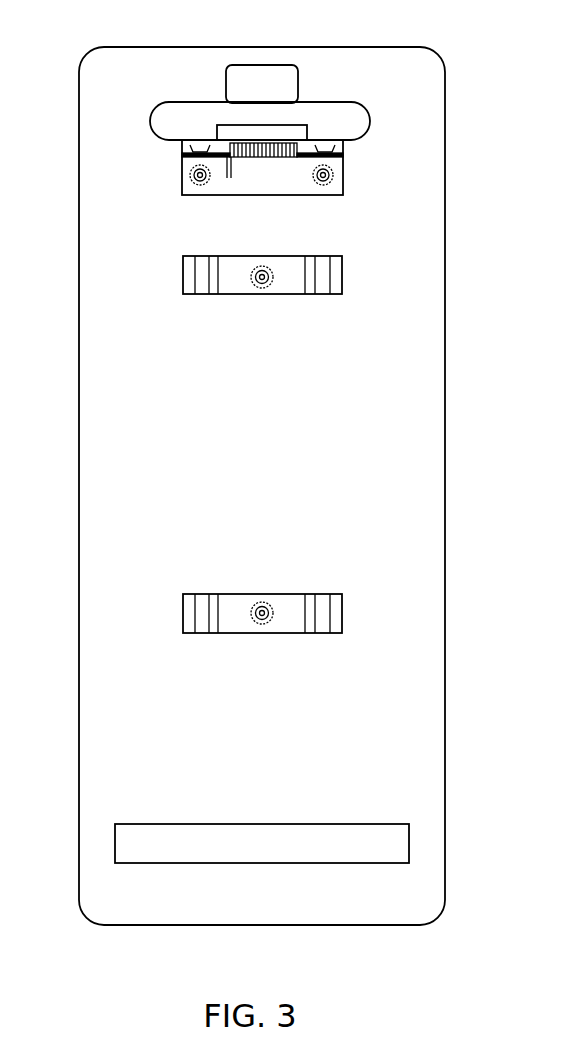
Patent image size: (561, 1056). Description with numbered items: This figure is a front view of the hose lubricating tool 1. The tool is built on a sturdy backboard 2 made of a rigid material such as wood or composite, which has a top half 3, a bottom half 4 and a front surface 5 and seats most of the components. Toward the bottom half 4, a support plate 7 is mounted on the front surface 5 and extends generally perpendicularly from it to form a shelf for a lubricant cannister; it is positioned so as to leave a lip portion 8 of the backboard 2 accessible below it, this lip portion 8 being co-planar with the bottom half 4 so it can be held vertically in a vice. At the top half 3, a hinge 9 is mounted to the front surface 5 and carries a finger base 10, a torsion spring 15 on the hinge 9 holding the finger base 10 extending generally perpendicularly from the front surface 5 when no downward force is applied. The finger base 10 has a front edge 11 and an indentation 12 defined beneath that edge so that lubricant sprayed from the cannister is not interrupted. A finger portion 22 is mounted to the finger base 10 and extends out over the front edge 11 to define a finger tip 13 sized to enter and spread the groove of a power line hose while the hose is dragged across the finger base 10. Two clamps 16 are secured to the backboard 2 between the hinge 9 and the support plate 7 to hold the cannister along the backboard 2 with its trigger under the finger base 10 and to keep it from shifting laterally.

The hose lubricating tool 1 is at (445, 138).
The backboard 2 is at (402, 228).
The top half 3 is at (397, 330).
The bottom half 4 is at (422, 758).
The front surface 5 is at (375, 435).
The support plate 7 is at (343, 837).
The lip portion 8 is at (350, 912).
The hinge 9 is at (252, 183).
The finger base 10 is at (165, 127).
The front edge 11 is at (185, 118).
The indentation 12 is at (275, 132).
The finger tip 13 is at (247, 88).
The torsion spring 15 is at (225, 157).
The clamps 16 is at (202, 290).
The finger portion 22 is at (268, 82).